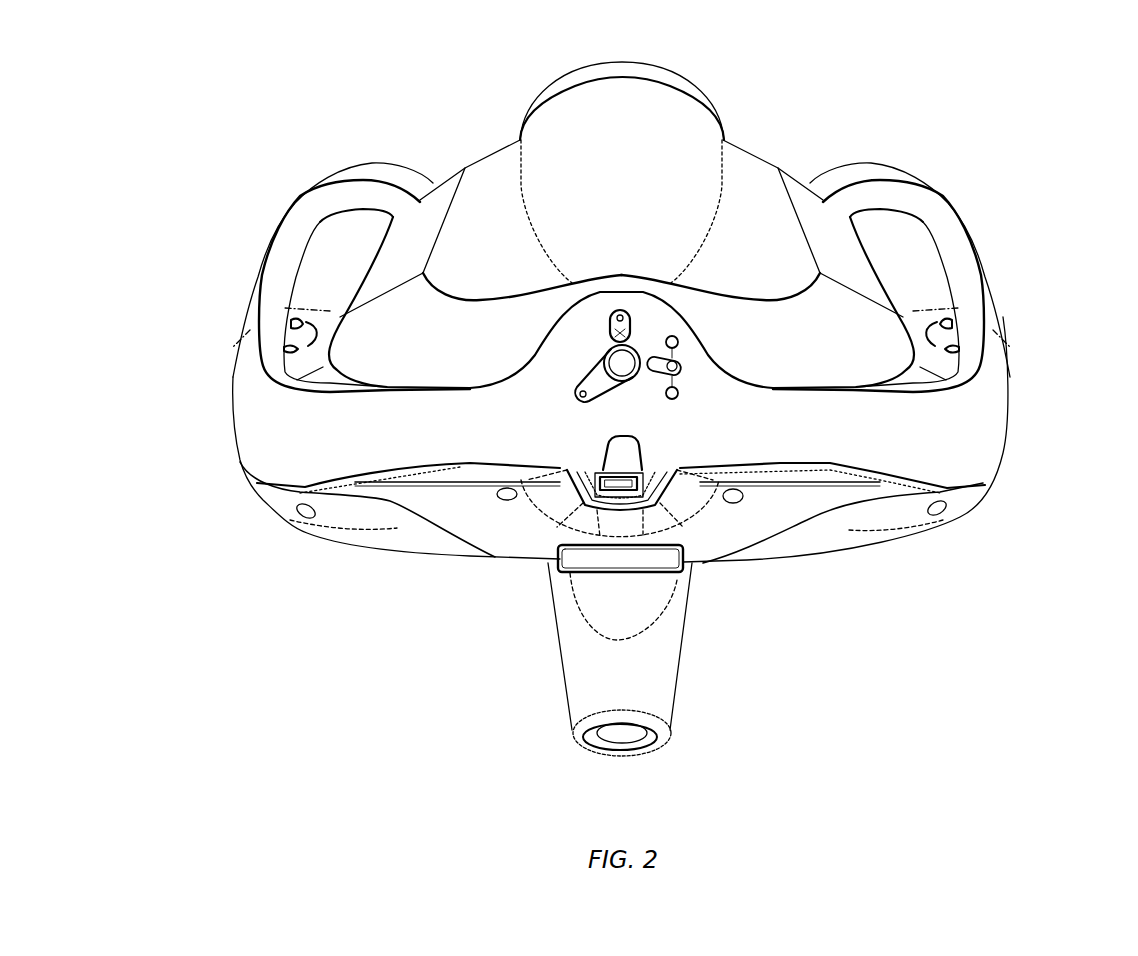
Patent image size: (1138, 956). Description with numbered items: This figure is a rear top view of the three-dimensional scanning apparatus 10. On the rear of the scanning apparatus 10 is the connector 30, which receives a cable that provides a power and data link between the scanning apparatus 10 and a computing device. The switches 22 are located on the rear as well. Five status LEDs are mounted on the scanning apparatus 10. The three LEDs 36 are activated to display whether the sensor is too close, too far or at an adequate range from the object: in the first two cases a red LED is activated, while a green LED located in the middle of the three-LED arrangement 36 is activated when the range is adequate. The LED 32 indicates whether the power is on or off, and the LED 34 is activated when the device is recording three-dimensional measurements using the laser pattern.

The 3-D scanning apparatus 10 is at (740, 140).
The switches 22 is at (288, 318).
The connector 30 is at (633, 483).
The LED 32 is at (618, 312).
The LED 34 is at (583, 393).
The three LEDs 36 is at (677, 360).